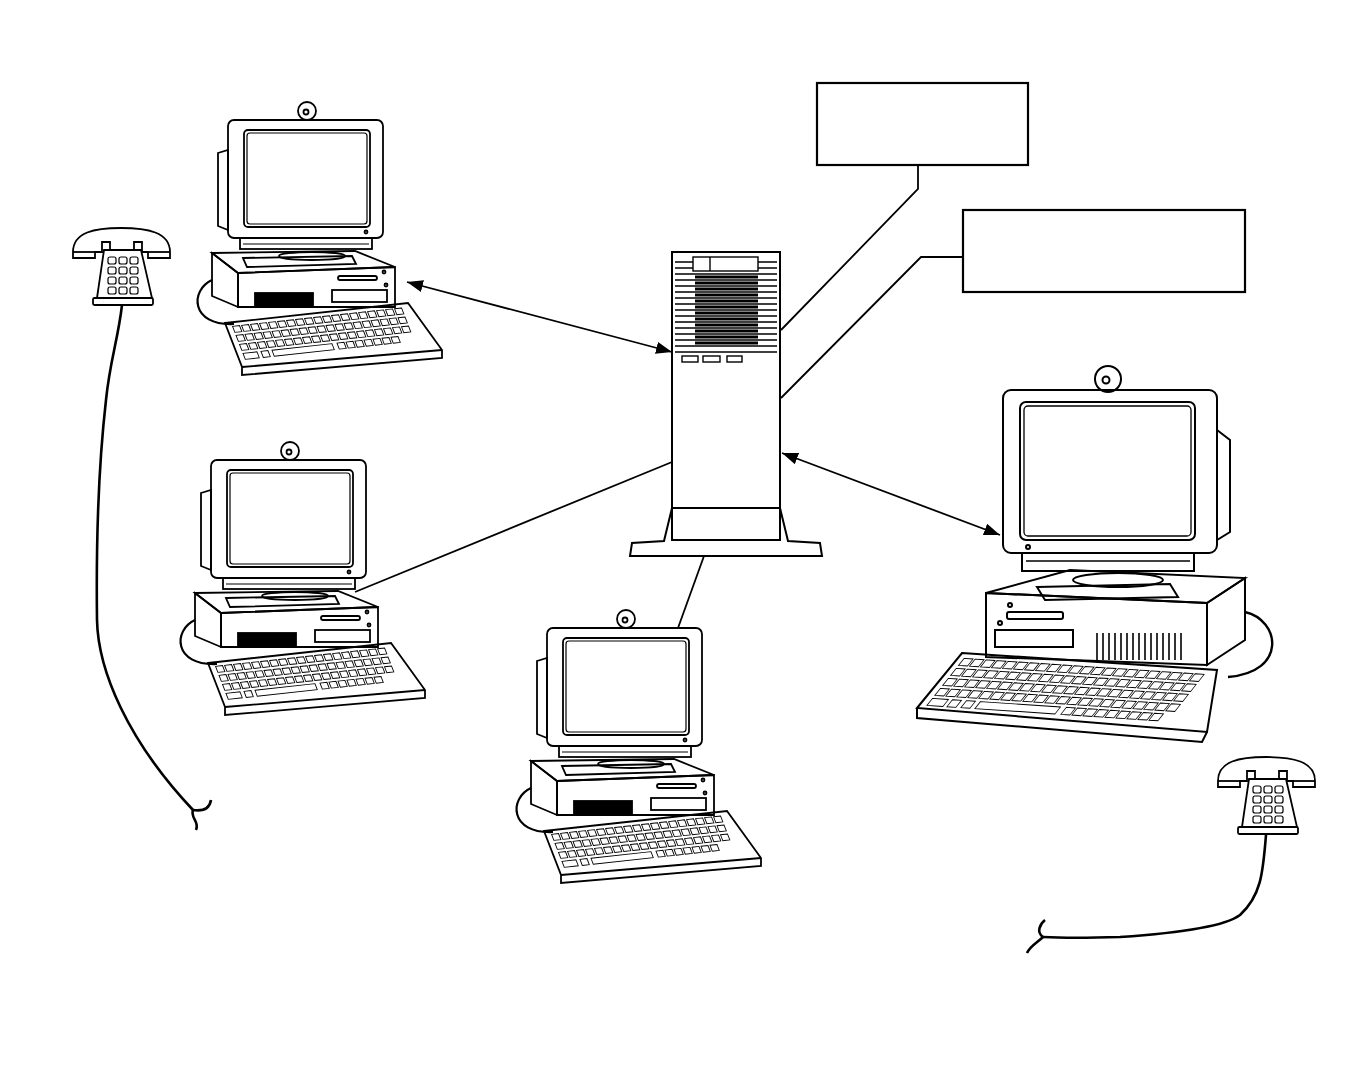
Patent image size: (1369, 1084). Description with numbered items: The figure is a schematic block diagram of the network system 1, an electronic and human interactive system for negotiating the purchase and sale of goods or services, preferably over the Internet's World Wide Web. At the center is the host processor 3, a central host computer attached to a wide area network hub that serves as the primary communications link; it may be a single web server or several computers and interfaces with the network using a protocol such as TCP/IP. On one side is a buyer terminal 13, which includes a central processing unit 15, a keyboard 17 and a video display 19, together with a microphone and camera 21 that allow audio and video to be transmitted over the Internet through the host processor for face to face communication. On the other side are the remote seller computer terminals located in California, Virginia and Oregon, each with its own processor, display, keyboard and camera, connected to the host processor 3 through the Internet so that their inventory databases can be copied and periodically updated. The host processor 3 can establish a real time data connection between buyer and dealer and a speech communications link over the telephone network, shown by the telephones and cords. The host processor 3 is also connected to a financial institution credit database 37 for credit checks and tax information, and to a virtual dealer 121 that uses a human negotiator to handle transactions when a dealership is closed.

The network system 1 is at (620, 166).
The host processor 3 is at (671, 410).
The buyer terminal 13 is at (1110, 551).
The central processing unit 15 is at (1245, 593).
The keyboard 17 is at (957, 653).
The video display 19 is at (1033, 415).
The microphone and camera 21 is at (1121, 369).
The financial institution credit database 37 is at (1133, 210).
The virtual dealer 121 is at (1030, 121).